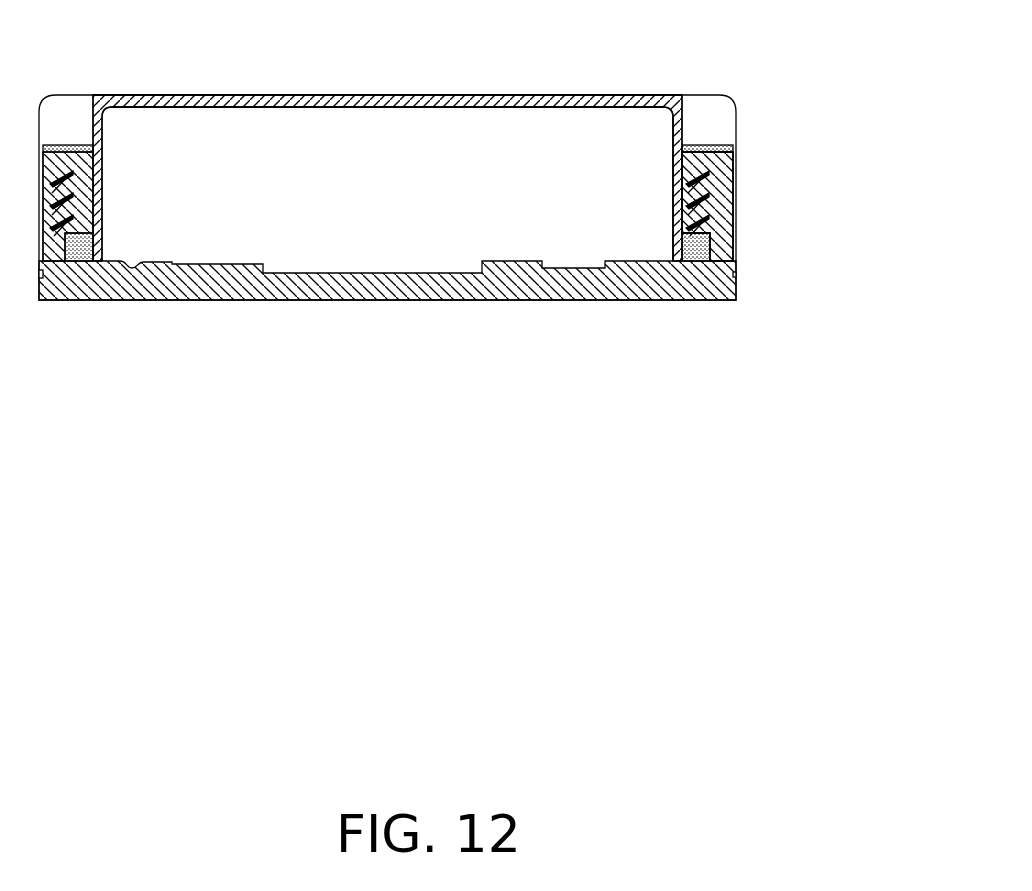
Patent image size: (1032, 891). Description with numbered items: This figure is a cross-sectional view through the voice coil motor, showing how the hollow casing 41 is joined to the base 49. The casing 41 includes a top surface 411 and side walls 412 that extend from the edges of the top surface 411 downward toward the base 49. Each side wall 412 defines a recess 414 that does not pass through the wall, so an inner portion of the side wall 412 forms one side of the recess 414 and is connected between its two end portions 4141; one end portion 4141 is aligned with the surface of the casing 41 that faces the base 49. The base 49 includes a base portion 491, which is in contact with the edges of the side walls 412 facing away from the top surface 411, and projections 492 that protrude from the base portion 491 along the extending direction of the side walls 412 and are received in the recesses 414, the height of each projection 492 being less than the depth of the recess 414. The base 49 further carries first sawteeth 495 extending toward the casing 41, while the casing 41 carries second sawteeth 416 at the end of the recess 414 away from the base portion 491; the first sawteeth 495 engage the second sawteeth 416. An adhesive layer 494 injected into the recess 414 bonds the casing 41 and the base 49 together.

The casing 41 is at (457, 103).
The top surface 411 is at (363, 94).
The side wall 412 is at (673, 210).
The recess 414 is at (686, 257).
The end portion 4141 is at (701, 264).
The second sawteeth 416 is at (697, 147).
The base 49 is at (850, 152).
The base portion 491 is at (727, 287).
The projection 492 is at (715, 218).
The adhesive layer 494 is at (53, 152).
The first sawteeth 495 is at (703, 166).